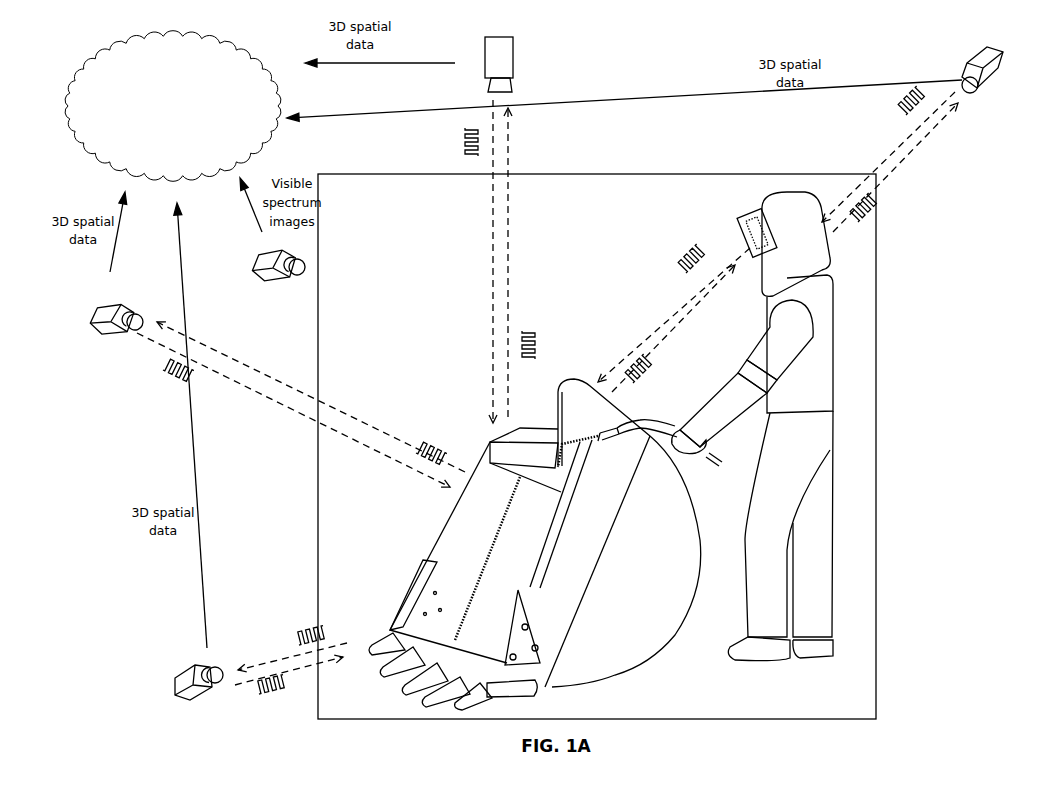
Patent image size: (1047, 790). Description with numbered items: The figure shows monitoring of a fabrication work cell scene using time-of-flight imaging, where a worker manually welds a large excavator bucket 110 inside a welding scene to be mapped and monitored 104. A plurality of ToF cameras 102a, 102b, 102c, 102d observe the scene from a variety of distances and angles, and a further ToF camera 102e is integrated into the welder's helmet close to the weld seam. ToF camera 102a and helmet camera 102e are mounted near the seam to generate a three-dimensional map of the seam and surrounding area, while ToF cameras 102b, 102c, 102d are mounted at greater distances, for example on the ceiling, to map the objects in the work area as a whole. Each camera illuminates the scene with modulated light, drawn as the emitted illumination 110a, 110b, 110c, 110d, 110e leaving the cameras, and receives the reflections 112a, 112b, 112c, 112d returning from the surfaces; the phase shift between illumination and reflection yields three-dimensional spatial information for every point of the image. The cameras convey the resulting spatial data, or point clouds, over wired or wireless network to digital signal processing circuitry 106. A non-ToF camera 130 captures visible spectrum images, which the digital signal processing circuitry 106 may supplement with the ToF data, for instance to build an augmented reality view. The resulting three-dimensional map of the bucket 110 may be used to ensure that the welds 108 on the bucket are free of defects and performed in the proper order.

The ToF camera 102a is at (173, 685).
The ToF camera 102b is at (99, 301).
The ToF camera 102c is at (485, 54).
The ToF camera 102d is at (998, 47).
The ToF camera 102e is at (769, 226).
The welding scene to be mapped/monitored 104 is at (584, 220).
The digital signal processing circuitry 106 is at (159, 135).
The welds 108 is at (583, 437).
The excavator bucket 110 is at (663, 648).
The emitted signal 110a is at (336, 665).
The emitted signal 110b is at (267, 399).
The emitted signal 110c is at (490, 247).
The emitted signal 110d is at (891, 150).
The emitted signal 110e is at (670, 310).
The reflected signal 112a is at (272, 661).
The reflected signal 112b is at (262, 371).
The reflected signal 112c is at (510, 258).
The reflected signal 112d is at (918, 146).
The non-ToF camera 130 is at (258, 247).